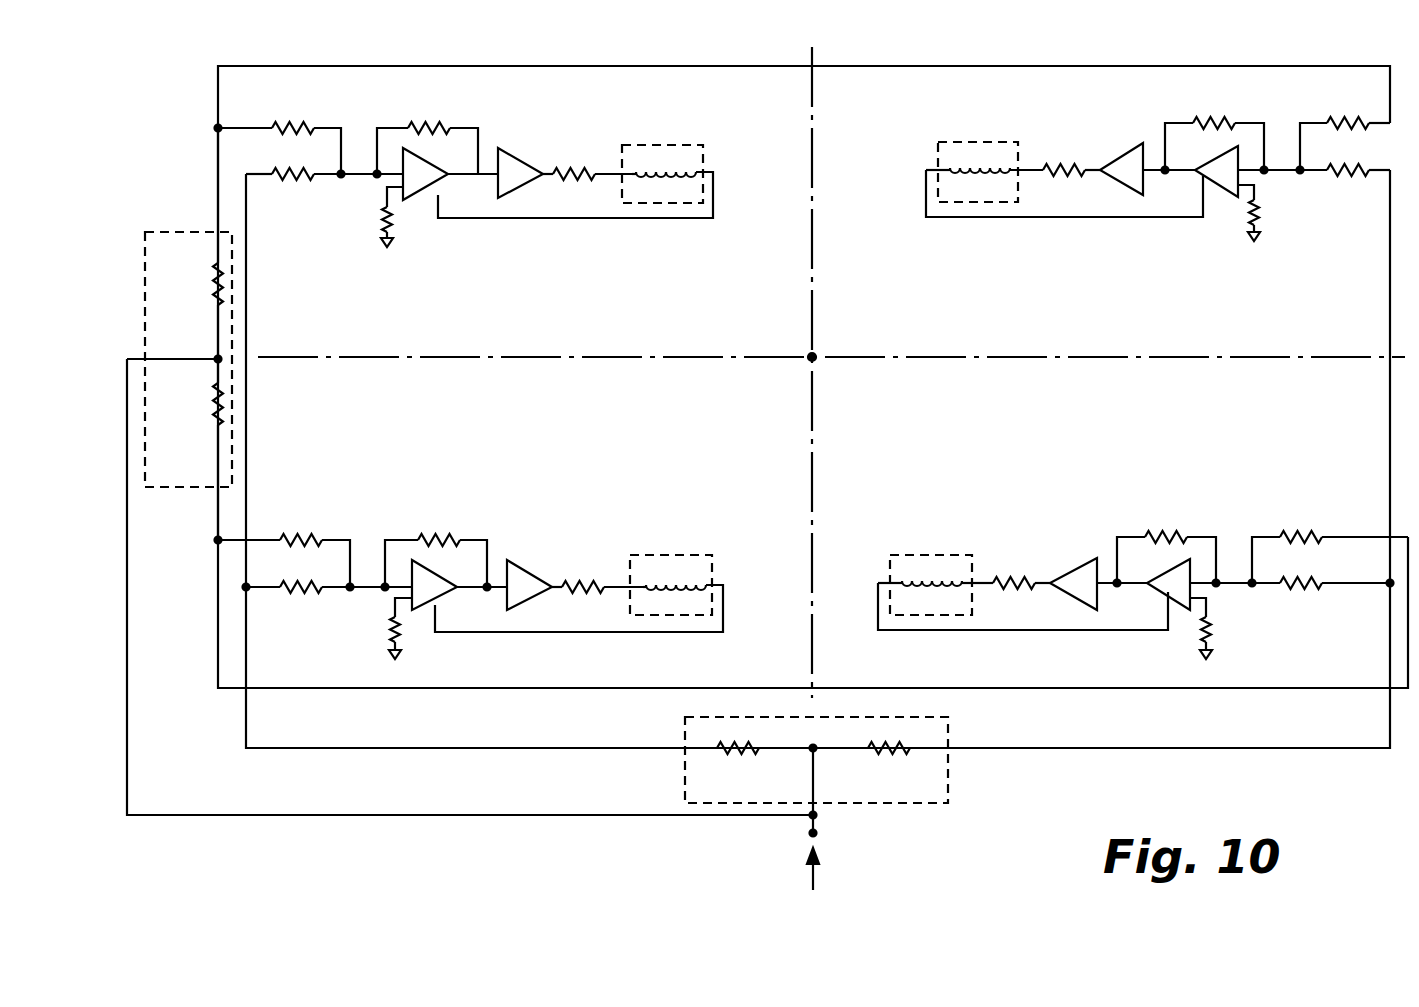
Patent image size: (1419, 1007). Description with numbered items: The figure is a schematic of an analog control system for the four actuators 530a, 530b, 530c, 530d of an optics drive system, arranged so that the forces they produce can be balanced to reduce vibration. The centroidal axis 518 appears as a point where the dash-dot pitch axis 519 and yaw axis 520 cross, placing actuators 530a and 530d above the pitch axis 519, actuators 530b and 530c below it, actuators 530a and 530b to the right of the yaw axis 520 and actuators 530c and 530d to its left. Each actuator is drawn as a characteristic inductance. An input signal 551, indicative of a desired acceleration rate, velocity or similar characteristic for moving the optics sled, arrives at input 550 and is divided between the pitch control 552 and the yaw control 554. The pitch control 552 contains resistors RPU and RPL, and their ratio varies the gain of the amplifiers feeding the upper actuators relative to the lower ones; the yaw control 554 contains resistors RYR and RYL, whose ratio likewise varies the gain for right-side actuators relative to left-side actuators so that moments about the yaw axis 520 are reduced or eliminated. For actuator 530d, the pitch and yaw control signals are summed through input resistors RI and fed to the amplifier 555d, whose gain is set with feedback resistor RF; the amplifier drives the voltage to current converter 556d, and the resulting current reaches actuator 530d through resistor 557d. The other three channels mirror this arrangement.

The centroidal axis 518 is at (815, 355).
The pitch axis 519 is at (1078, 356).
The yaw axis 520 is at (815, 246).
The actuator 530a is at (972, 142).
The actuator 530b is at (946, 555).
The actuator 530c is at (677, 555).
The actuator 530d is at (667, 145).
The input 550 is at (818, 834).
The input signal 551 is at (816, 878).
The pitch control 552 is at (168, 232).
The yaw control 554 is at (948, 717).
The amplifier 555d is at (410, 193).
The voltage to current converter 556d is at (520, 160).
The resistor 557d is at (594, 170).
The input resistor RI is at (309, 150).
The feedback resistor RF is at (426, 129).
The upper pitch resistor RPU is at (190, 243).
The lower pitch resistor RPL is at (190, 449).
The left yaw resistor RYL is at (734, 768).
The right yaw resistor RYR is at (886, 768).